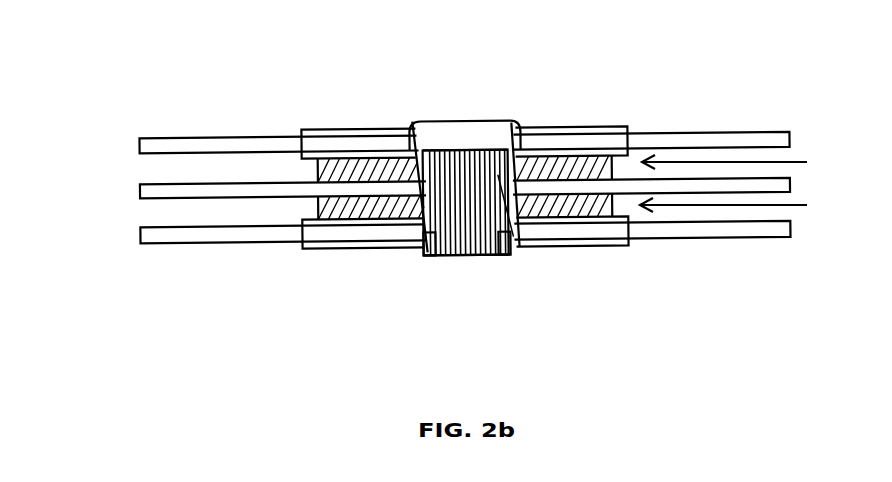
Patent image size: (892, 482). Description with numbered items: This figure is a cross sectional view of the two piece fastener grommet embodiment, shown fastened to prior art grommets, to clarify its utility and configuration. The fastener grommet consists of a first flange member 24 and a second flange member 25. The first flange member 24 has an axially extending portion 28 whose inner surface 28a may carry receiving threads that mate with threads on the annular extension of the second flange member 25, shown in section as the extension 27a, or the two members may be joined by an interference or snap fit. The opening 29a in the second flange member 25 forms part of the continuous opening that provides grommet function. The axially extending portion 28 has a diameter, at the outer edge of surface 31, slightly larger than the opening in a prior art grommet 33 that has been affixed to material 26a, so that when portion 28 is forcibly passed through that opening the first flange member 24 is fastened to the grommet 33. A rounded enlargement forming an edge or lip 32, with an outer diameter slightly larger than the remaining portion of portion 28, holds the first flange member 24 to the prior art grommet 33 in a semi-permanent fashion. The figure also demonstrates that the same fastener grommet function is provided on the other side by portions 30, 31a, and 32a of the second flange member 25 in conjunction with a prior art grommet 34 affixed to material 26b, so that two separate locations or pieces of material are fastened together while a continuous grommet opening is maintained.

The first flange member 24 is at (848, 176).
The second flange member 25 is at (848, 219).
The material 26a is at (157, 143).
The material 26b is at (157, 236).
The connector body 27a is at (477, 222).
The axially extending portion 28 is at (508, 130).
The inner surface 28a is at (452, 130).
The opening 29a is at (467, 263).
The portion 30 is at (517, 253).
The surface 31 is at (518, 130).
The portion 31a is at (523, 250).
The edge or lip 32 is at (522, 128).
The portion 32a is at (523, 247).
The prior art grommet 33 is at (622, 130).
The prior art grommet 34 is at (628, 243).